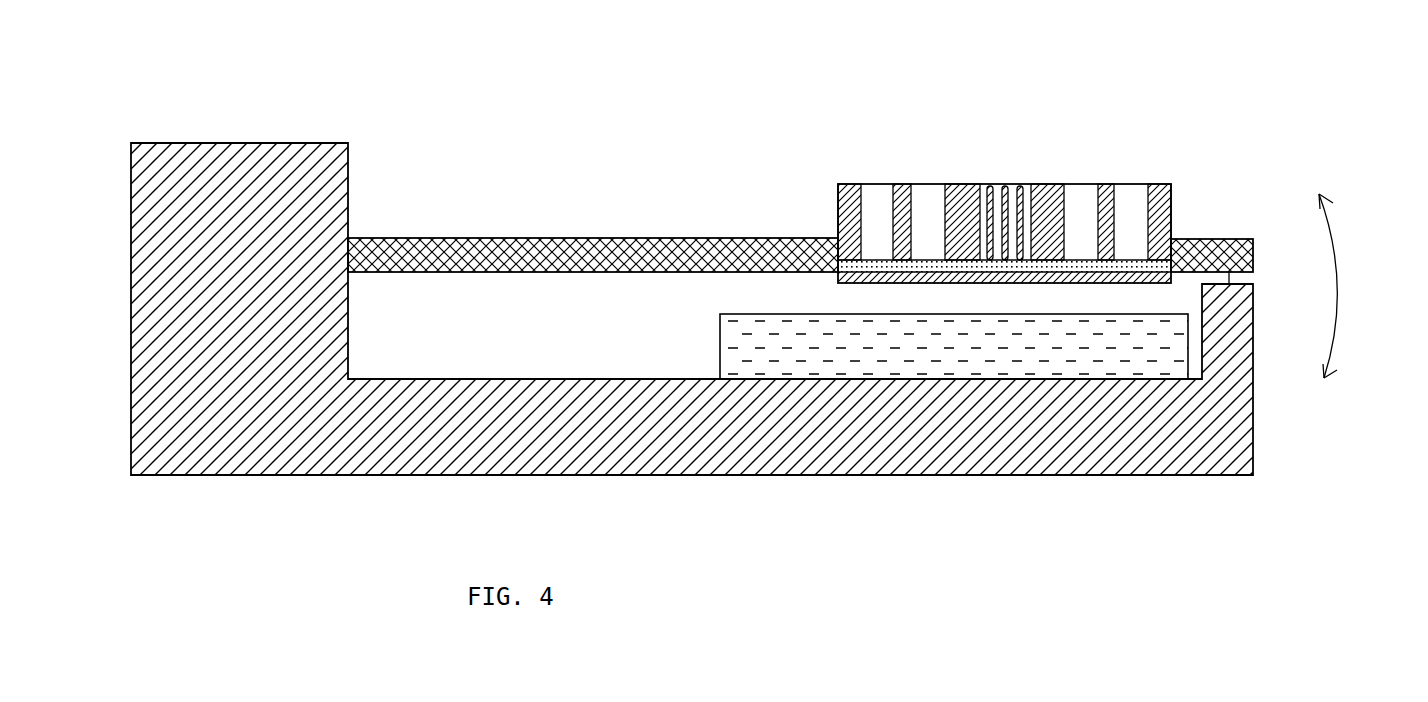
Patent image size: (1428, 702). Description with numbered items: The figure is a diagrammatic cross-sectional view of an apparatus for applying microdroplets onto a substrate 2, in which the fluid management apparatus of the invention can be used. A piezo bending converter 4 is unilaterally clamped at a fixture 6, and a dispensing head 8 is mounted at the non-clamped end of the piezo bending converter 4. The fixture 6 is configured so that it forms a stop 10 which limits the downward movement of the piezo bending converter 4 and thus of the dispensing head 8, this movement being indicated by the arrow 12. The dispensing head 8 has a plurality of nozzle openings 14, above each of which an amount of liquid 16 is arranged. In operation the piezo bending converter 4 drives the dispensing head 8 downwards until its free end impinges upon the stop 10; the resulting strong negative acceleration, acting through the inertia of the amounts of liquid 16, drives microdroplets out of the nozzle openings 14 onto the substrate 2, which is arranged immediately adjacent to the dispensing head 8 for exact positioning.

The substrate 2 is at (774, 343).
The piezo bending converter 4 is at (562, 238).
The fixture 6 is at (242, 143).
The dispensing head 8 is at (1055, 185).
The stop 10 is at (1237, 240).
The arrow 12 is at (1362, 286).
The nozzle openings 14 is at (988, 283).
The amounts of liquid 16 is at (981, 242).